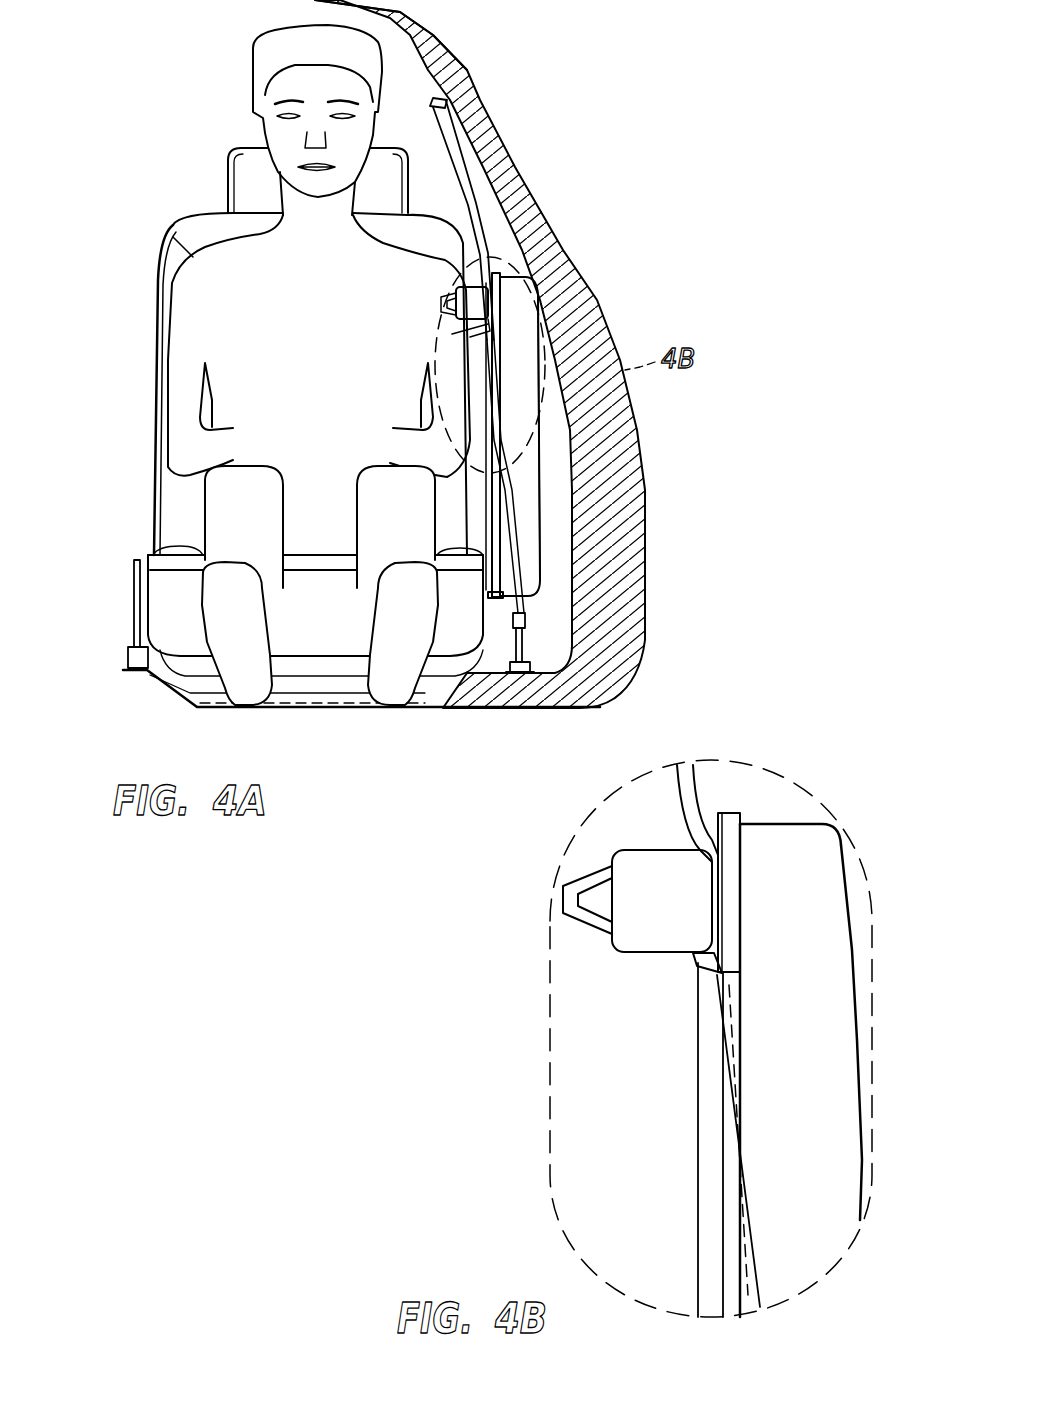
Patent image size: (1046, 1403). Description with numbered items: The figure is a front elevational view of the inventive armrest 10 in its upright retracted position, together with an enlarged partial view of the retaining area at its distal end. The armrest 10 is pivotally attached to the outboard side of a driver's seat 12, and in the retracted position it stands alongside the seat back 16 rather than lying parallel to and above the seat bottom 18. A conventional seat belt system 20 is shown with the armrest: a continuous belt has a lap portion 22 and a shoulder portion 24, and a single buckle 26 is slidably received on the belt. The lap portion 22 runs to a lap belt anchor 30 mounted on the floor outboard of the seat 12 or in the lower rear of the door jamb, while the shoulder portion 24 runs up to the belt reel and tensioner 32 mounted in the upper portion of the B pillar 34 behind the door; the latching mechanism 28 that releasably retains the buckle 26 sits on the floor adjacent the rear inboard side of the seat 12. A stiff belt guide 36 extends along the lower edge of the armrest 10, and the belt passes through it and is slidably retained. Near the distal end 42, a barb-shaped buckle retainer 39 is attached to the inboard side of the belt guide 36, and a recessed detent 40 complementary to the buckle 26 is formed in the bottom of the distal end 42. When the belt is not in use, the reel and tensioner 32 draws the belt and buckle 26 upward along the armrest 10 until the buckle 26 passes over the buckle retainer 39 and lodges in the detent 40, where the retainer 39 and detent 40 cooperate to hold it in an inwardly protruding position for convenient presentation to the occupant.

In FIG. 4A, the armrest 10 is at (523, 409).
In FIG. 4B, the armrest 10 is at (810, 1050).
In FIG. 4A, the seat 12 is at (291, 412).
In FIG. 4A, the seat back 16 is at (478, 520).
In FIG. 4A, the seat bottom 18 is at (336, 617).
In FIG. 4A, the seat belt system 20 is at (410, 324).
In FIG. 4B, the seat belt system 20 is at (642, 950).
In FIG. 4A, the lap portion 22 is at (517, 515).
In FIG. 4B, the lap portion 22 is at (745, 1292).
In FIG. 4A, the shoulder portion 24 is at (467, 183).
In FIG. 4B, the shoulder portion 24 is at (683, 793).
In FIG. 4A, the buckle 26 is at (437, 323).
In FIG. 4B, the buckle 26 is at (675, 919).
In FIG. 4A, the latching mechanism 28 is at (133, 587).
In FIG. 4A, the lap belt anchor 30 is at (527, 643).
In FIG. 4A, the belt reel and tensioner 32 is at (462, 75).
In FIG. 4A, the B pillar 34 is at (482, 103).
In FIG. 4A, the belt guide 36 is at (500, 347).
In FIG. 4B, the belt guide 36 is at (730, 1155).
In FIG. 4A, the buckle retainer 39 is at (467, 332).
In FIG. 4B, the buckle retainer 39 is at (697, 960).
In FIG. 4B, the recessed detent 40 is at (712, 818).
In FIG. 4A, the distal end 42 is at (520, 287).
In FIG. 4B, the distal end 42 is at (802, 872).